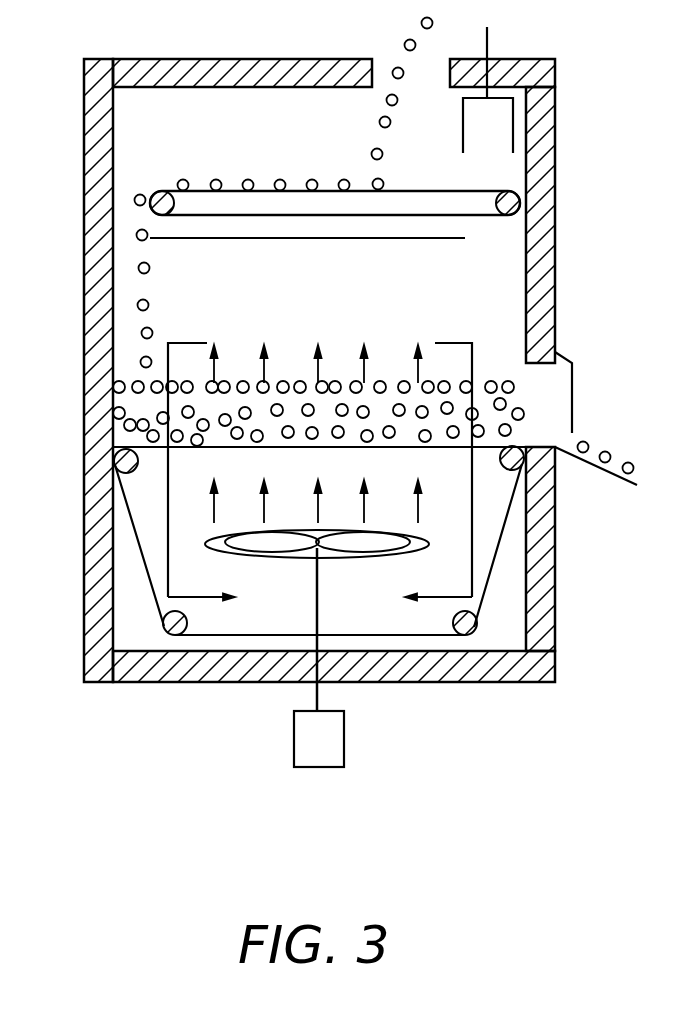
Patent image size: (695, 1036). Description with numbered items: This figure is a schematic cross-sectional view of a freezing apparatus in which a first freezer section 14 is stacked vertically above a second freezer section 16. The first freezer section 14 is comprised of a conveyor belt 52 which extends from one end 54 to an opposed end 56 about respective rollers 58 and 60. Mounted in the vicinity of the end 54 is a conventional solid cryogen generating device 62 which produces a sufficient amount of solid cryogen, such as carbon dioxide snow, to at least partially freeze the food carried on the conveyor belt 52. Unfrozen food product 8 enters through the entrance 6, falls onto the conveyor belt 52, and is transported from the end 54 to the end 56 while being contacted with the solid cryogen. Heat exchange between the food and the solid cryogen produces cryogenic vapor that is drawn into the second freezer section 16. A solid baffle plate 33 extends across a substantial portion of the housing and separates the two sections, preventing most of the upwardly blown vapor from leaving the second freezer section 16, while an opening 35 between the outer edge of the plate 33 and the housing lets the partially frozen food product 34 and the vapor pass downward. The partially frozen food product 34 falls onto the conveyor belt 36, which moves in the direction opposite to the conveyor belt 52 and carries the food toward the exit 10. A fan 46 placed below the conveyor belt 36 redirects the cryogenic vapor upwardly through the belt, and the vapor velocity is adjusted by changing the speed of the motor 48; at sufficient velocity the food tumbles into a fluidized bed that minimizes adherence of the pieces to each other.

The entrance 6 is at (385, 70).
The unfrozen food product 8 is at (432, 21).
The exit 10 is at (585, 405).
The first freezer section 14 is at (145, 173).
The second freezer section 16 is at (160, 535).
The baffle plate 33 is at (297, 242).
The partially frozen food product 34 is at (150, 270).
The opening 35 is at (125, 303).
The conveyor belt 36 is at (370, 448).
The fan 46 is at (329, 557).
The motor 48 is at (319, 739).
The conveyor belt 52 is at (443, 216).
The end 54 is at (324, 199).
The opposed end 56 is at (200, 183).
The roller 58 is at (520, 201).
The roller 60 is at (152, 206).
The solid cryogen generating device 62 is at (488, 90).